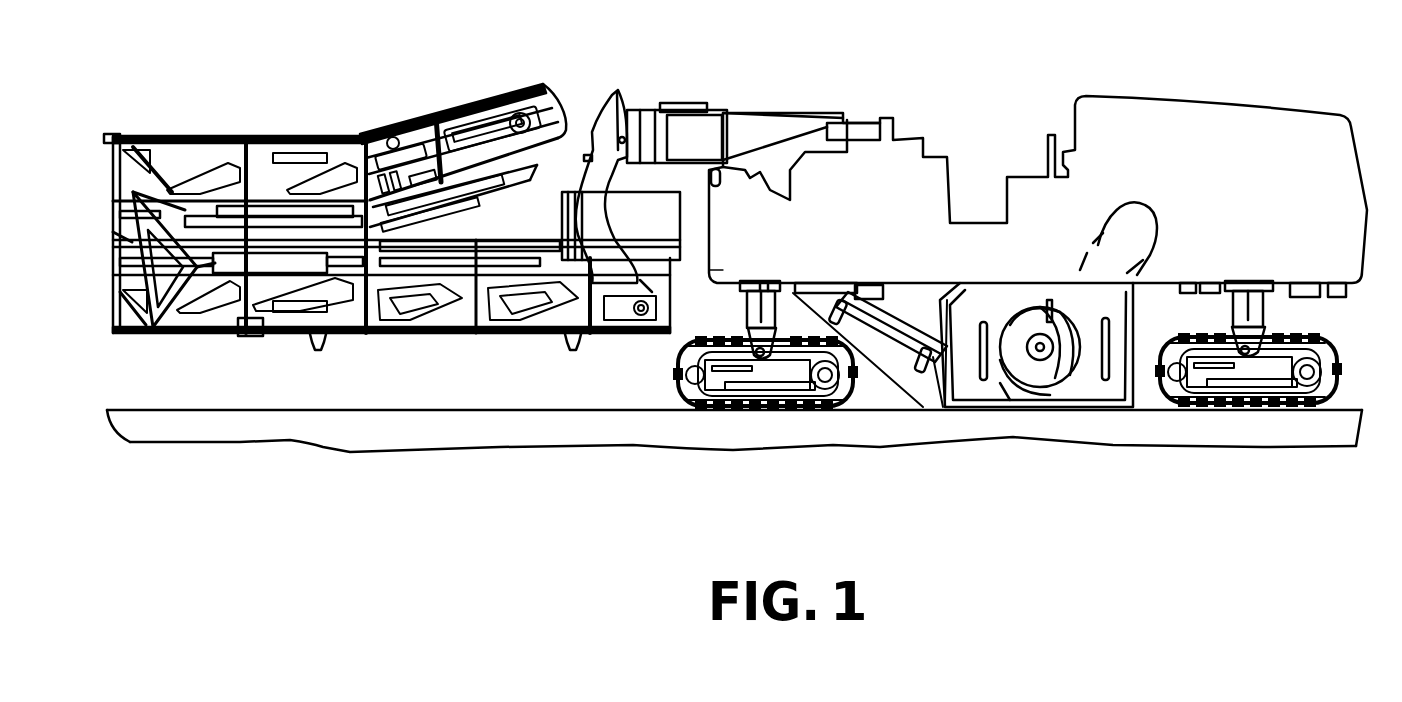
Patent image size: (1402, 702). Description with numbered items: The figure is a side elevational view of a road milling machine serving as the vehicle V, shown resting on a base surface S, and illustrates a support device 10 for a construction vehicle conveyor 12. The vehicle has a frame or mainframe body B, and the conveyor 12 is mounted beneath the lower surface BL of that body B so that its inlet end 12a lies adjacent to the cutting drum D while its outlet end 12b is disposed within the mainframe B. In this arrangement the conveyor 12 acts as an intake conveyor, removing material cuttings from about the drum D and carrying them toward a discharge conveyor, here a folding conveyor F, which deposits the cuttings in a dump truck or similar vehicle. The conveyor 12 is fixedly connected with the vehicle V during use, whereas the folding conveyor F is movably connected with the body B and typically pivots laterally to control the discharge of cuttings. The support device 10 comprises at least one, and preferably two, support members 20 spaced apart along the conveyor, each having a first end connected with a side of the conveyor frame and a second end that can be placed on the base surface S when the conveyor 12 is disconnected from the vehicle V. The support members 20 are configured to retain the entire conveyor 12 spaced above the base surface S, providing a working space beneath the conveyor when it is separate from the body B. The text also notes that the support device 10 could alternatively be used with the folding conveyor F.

The folding conveyor F is at (272, 102).
The vehicle V is at (624, 47).
The vehicle body B is at (1143, 75).
The outlet end 12b is at (803, 282).
The support member 20 is at (840, 302).
The conveyor 12 is at (893, 292).
The inlet end 12a is at (950, 312).
The lower surface of the body BL is at (1167, 290).
The cutting drum D is at (1084, 396).
The support device 10 is at (869, 400).
The base surface S is at (518, 408).